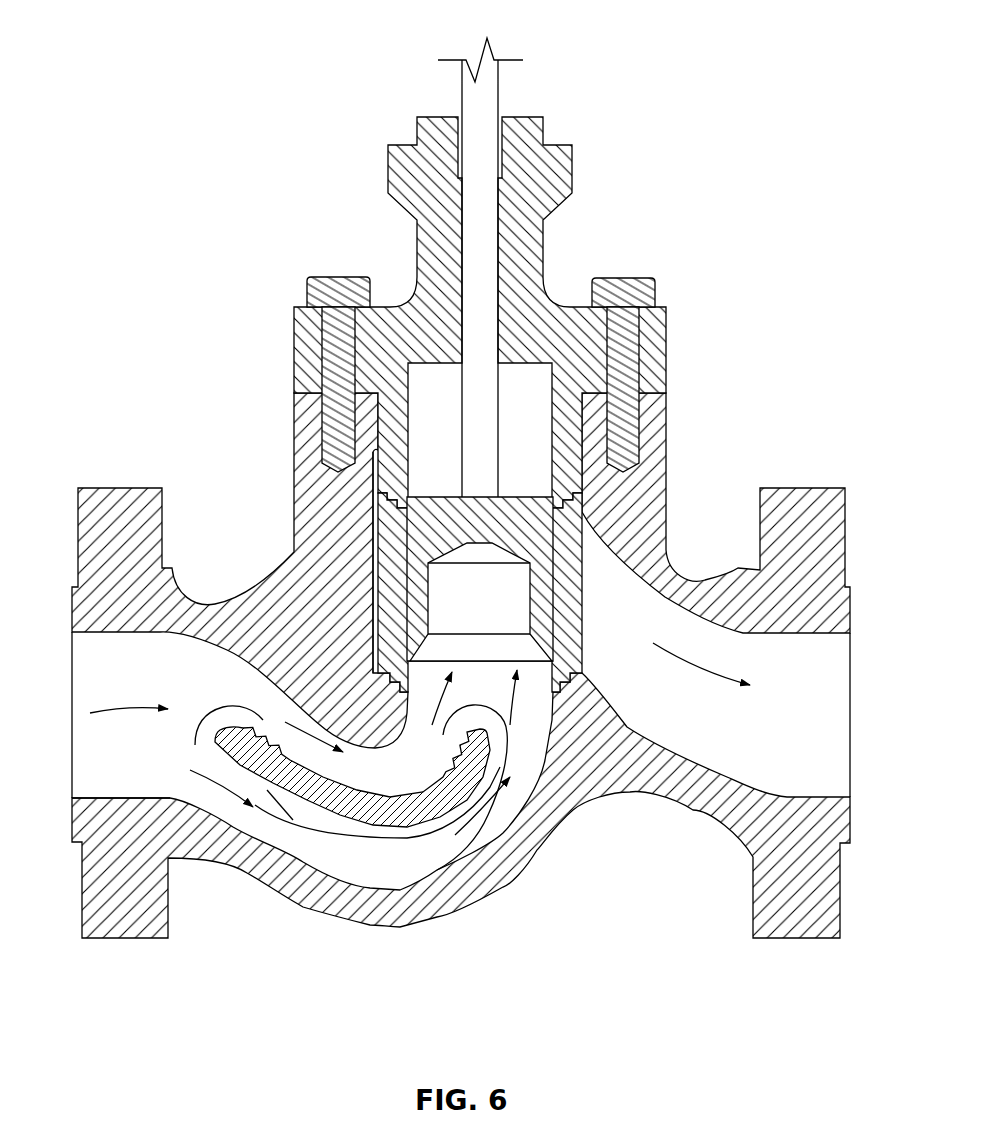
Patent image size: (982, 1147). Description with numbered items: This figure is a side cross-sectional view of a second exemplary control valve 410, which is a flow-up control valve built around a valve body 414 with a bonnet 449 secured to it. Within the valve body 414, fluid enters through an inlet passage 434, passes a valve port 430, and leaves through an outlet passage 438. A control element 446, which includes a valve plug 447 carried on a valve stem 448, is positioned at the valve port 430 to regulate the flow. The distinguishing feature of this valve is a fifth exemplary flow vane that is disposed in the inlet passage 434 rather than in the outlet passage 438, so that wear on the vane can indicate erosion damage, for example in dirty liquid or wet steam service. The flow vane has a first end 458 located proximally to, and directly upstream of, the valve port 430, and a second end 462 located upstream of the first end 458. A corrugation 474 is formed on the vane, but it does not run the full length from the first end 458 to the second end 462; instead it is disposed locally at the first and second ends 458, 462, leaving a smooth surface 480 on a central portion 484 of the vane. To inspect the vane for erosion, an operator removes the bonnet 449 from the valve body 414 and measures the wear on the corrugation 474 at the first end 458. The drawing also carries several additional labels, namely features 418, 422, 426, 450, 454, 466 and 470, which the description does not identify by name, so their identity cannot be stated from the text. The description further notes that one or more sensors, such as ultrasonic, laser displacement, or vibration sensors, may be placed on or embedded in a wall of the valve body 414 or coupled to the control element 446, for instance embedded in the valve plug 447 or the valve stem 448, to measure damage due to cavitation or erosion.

The control valve 410 is at (150, 47).
The valve body 414 is at (645, 438).
The inlet 418 is at (102, 696).
The outlet 422 is at (826, 666).
The inlet passage 426 is at (160, 776).
The valve port 430 is at (520, 725).
The inlet passage 434 is at (298, 846).
The outlet passage 438 is at (707, 740).
The control element 446 is at (567, 533).
The valve plug 447 is at (420, 530).
The valve stem 448 is at (478, 287).
The bonnet 449 is at (528, 242).
The flow divider 450 is at (257, 727).
The lower channel 454 is at (410, 828).
The first end 458 is at (553, 700).
The second end 462 is at (200, 745).
The upstream region 466 is at (160, 679).
The valve plug 470 is at (545, 572).
The corrugation 474 is at (478, 765).
The smooth surface 480 is at (372, 795).
The central portion 484 is at (314, 802).